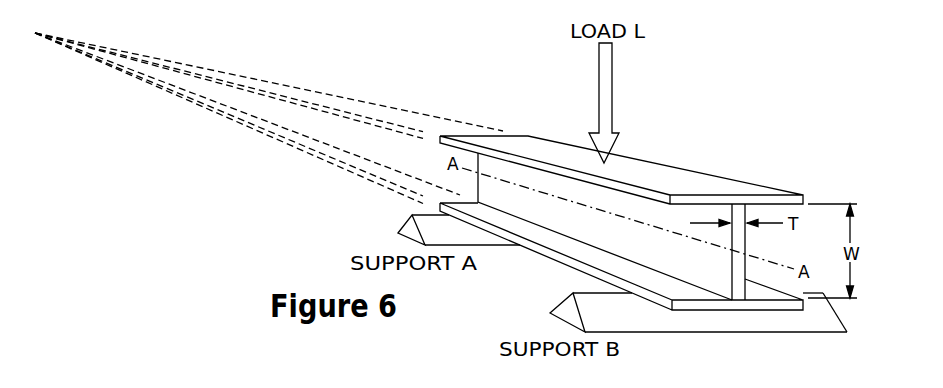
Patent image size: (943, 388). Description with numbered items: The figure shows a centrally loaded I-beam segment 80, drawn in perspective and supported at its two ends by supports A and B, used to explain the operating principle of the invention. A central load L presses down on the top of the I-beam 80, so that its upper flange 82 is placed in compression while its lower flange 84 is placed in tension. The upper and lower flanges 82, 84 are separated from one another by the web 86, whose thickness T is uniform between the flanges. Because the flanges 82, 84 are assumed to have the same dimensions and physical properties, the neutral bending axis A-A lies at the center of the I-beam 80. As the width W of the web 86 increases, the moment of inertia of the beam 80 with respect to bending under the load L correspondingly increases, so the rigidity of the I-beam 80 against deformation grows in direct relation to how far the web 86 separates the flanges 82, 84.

The I-beam segment 80 is at (638, 236).
The upper flange 82 is at (713, 200).
The lower flange 84 is at (767, 305).
The web 86 is at (737, 273).